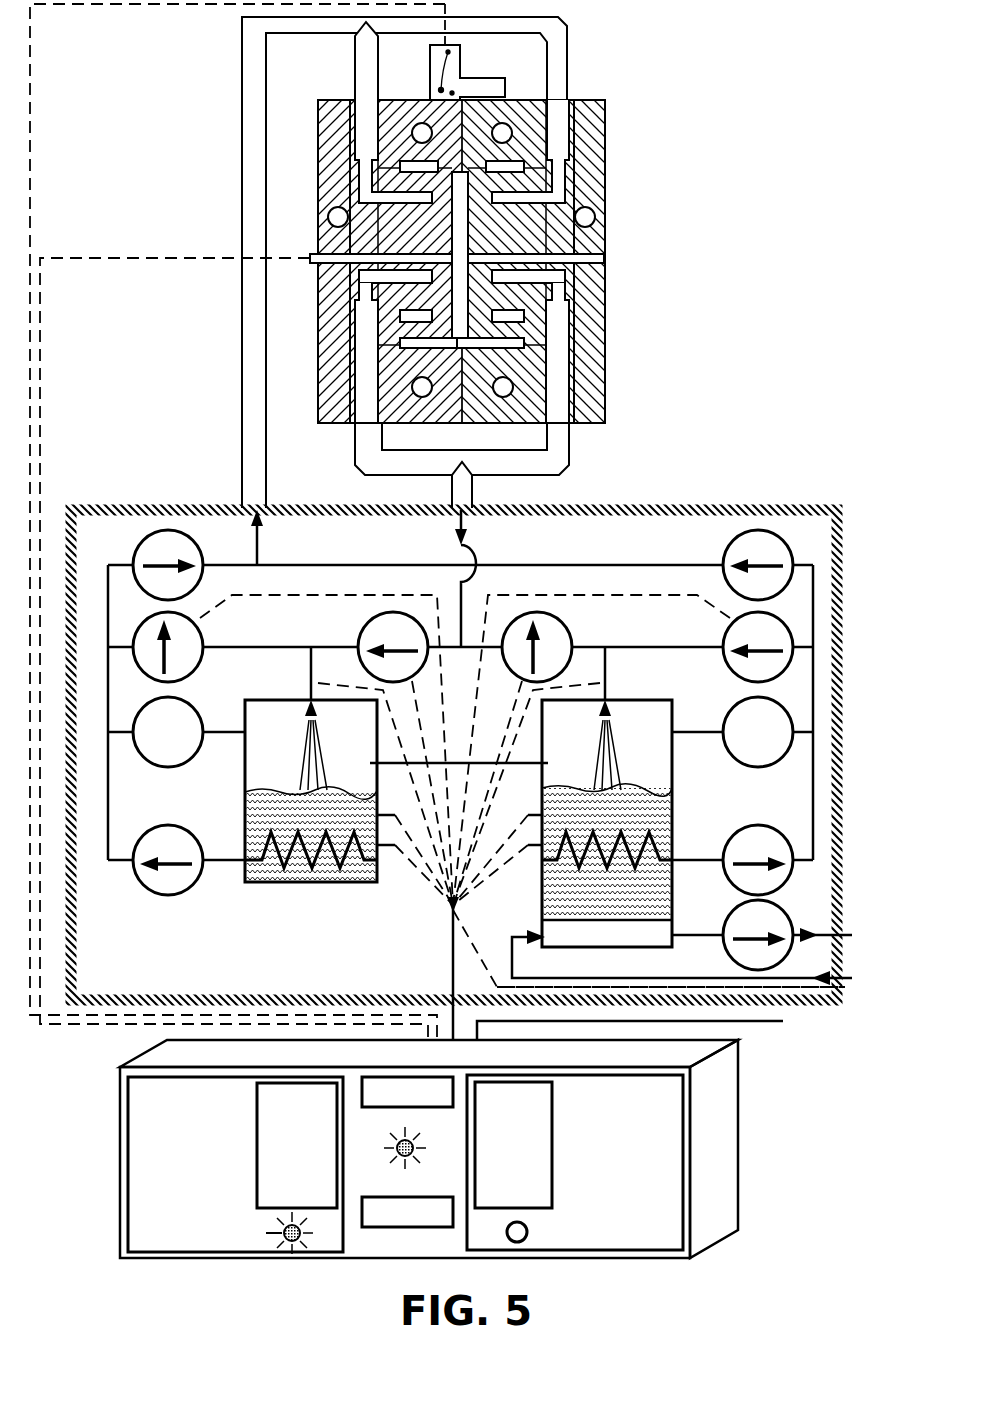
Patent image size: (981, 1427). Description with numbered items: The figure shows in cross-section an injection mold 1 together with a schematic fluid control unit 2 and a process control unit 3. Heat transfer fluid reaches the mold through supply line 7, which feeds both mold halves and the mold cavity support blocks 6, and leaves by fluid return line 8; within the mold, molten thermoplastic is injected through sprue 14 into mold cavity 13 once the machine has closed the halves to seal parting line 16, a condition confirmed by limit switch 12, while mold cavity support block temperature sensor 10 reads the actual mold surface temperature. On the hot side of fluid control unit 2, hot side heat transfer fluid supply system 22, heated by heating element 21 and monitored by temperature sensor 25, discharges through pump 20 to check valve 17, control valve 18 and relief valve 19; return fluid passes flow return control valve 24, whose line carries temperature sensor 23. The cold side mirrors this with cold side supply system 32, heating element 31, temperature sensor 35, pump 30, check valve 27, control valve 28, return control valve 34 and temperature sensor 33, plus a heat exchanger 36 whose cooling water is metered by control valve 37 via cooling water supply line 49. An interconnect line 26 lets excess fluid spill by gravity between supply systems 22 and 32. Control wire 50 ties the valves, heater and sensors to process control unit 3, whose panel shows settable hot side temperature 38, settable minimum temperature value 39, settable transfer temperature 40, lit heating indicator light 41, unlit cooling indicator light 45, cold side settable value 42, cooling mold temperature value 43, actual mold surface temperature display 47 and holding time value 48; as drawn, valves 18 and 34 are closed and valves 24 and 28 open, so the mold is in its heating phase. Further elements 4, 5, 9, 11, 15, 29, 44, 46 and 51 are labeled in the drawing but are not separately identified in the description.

The injection mold 1 is at (702, 64).
The fluid control unit 2 is at (798, 485).
The process control unit 3 is at (778, 1242).
The right mold block 4 is at (594, 137).
The left mold block 5 is at (327, 142).
The mold cavity support blocks 6 is at (422, 333).
The supply line 7 is at (256, 480).
The fluid return line 8 is at (557, 430).
The mold insert 9 is at (516, 241).
The mold cavity support block temperature sensor 10 is at (326, 256).
The heating passage 11 is at (330, 292).
The limit switch 12 is at (453, 65).
The mold cavity 13 is at (480, 220).
The sprue 14 is at (588, 259).
The mold cavity 15 is at (418, 164).
The parting line 16 is at (462, 419).
The check valve 17 is at (186, 561).
The control valve 18 is at (183, 655).
The relief valve 19 is at (185, 726).
The pump 20 is at (186, 848).
The heating element 21 is at (276, 883).
The hot side heat transfer fluid supply system 22 is at (246, 776).
The temperature sensor 23 is at (310, 677).
The flow return control valve 24 is at (362, 633).
The temperature sensor 25 is at (386, 813).
The interconnect line 26 is at (376, 760).
The check valve 27 is at (728, 553).
The control valve 28 is at (737, 660).
The relief valve 29 is at (736, 731).
The pump 30 is at (737, 848).
The heating element 31 is at (552, 862).
The cold side supply system 32 is at (672, 782).
The temperature sensor 33 is at (603, 684).
The control valve 34 is at (540, 638).
The temperature sensor 35 is at (530, 814).
The heat exchanger 36 is at (560, 925).
The control valve 37 is at (737, 927).
The settable temperature 38 is at (170, 1097).
The settable minimum temperature value 39 is at (192, 1150).
The settable transfer temperature 40 is at (163, 1199).
The indicator light 41 is at (289, 1244).
The supply system temperature settable value 42 is at (645, 1109).
The cooling mold temperature value 43 is at (620, 1151).
The cooling transfer temperature setting 44 is at (633, 1201).
The indicator light 45 is at (511, 1241).
The inject indicator lamp 46 is at (394, 1150).
The actual mold surface temperature display 47 is at (395, 1080).
The holding temperature settable time value 48 is at (377, 1224).
The cooling water supply line 49 is at (786, 985).
The control wire 50 is at (452, 977).
The control line 51 is at (748, 1022).